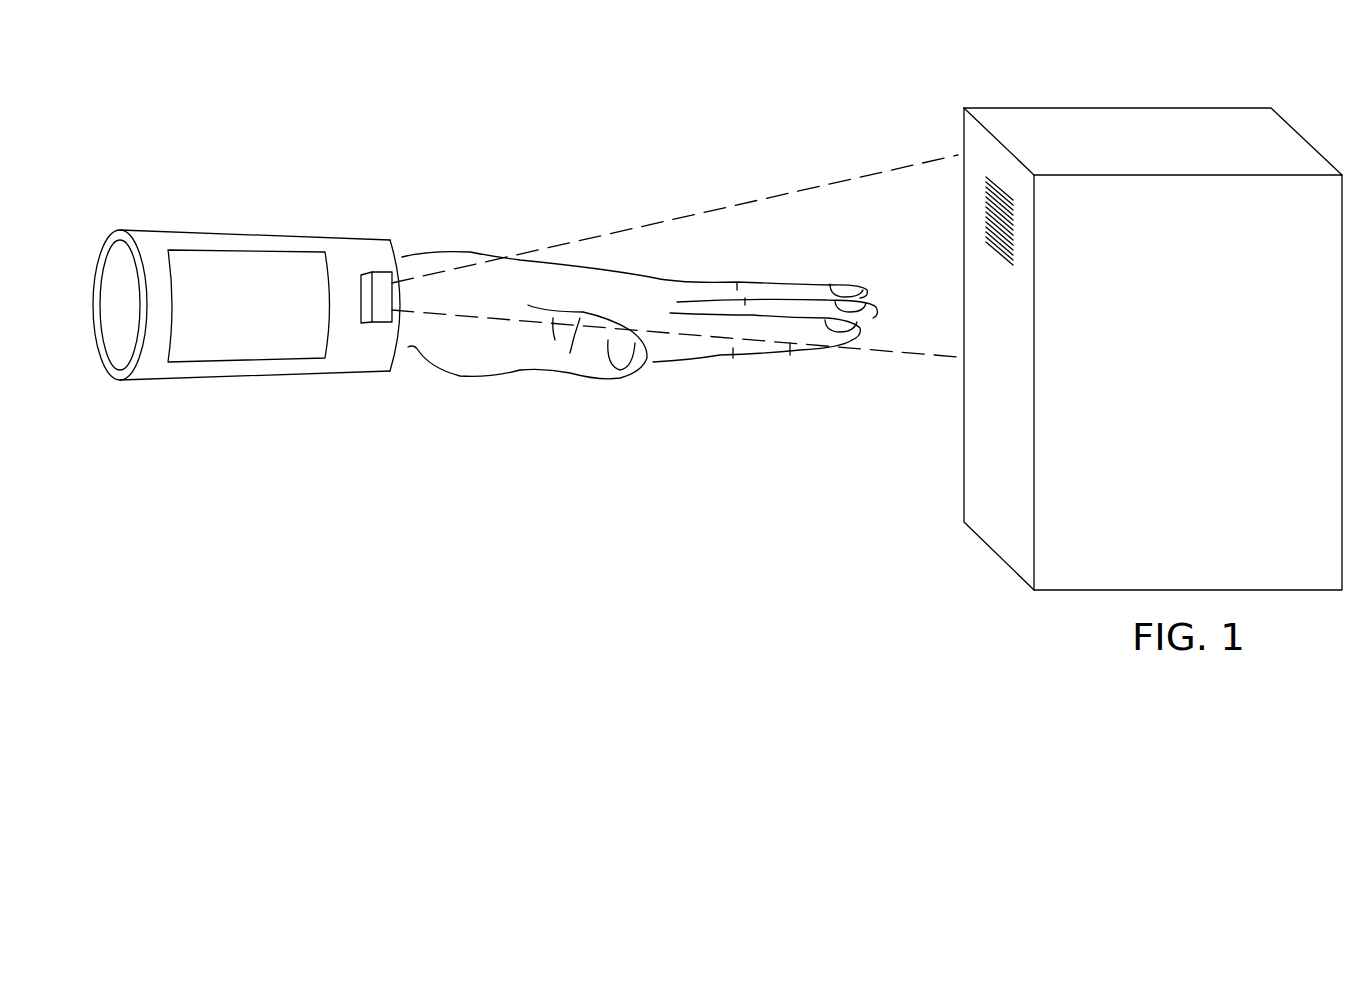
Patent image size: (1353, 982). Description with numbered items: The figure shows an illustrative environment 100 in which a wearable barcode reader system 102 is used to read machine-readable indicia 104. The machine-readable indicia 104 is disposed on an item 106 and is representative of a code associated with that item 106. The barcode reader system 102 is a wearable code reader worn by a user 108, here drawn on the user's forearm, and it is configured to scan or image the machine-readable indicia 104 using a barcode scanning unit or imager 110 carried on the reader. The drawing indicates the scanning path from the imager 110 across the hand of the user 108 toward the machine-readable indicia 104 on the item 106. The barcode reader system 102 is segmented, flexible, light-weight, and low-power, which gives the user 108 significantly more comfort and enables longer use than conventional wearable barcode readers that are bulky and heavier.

The environment 100 is at (412, 77).
The barcode reader system 102 is at (207, 230).
The machine-readable indicia 104 is at (998, 255).
The item 106 is at (1210, 397).
The user 108 is at (478, 368).
The barcode scanning unit or imager 110 is at (383, 268).